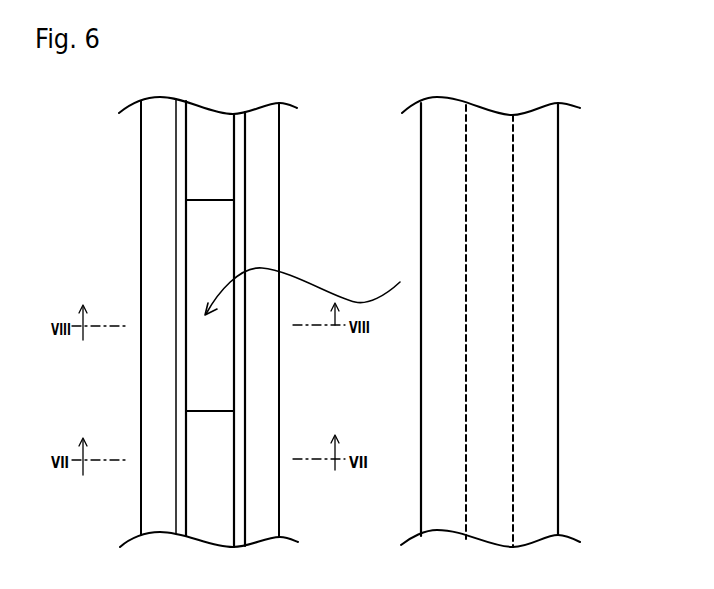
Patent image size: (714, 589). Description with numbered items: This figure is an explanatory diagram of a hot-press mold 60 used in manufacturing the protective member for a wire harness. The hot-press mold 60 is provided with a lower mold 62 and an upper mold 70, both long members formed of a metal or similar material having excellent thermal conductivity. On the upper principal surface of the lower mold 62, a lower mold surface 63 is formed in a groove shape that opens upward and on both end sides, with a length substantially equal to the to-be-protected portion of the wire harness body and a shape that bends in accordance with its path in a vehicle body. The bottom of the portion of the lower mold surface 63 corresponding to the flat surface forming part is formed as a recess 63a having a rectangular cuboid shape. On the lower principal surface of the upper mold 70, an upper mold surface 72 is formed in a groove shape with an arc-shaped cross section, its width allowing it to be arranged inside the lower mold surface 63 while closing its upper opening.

The hot-press mold 60 is at (348, 86).
The lower mold 62 is at (279, 213).
The lower mold surface 63 is at (232, 153).
The recess 63a is at (209, 410).
The upper mold 70 is at (558, 243).
The upper mold surface 72 is at (487, 439).